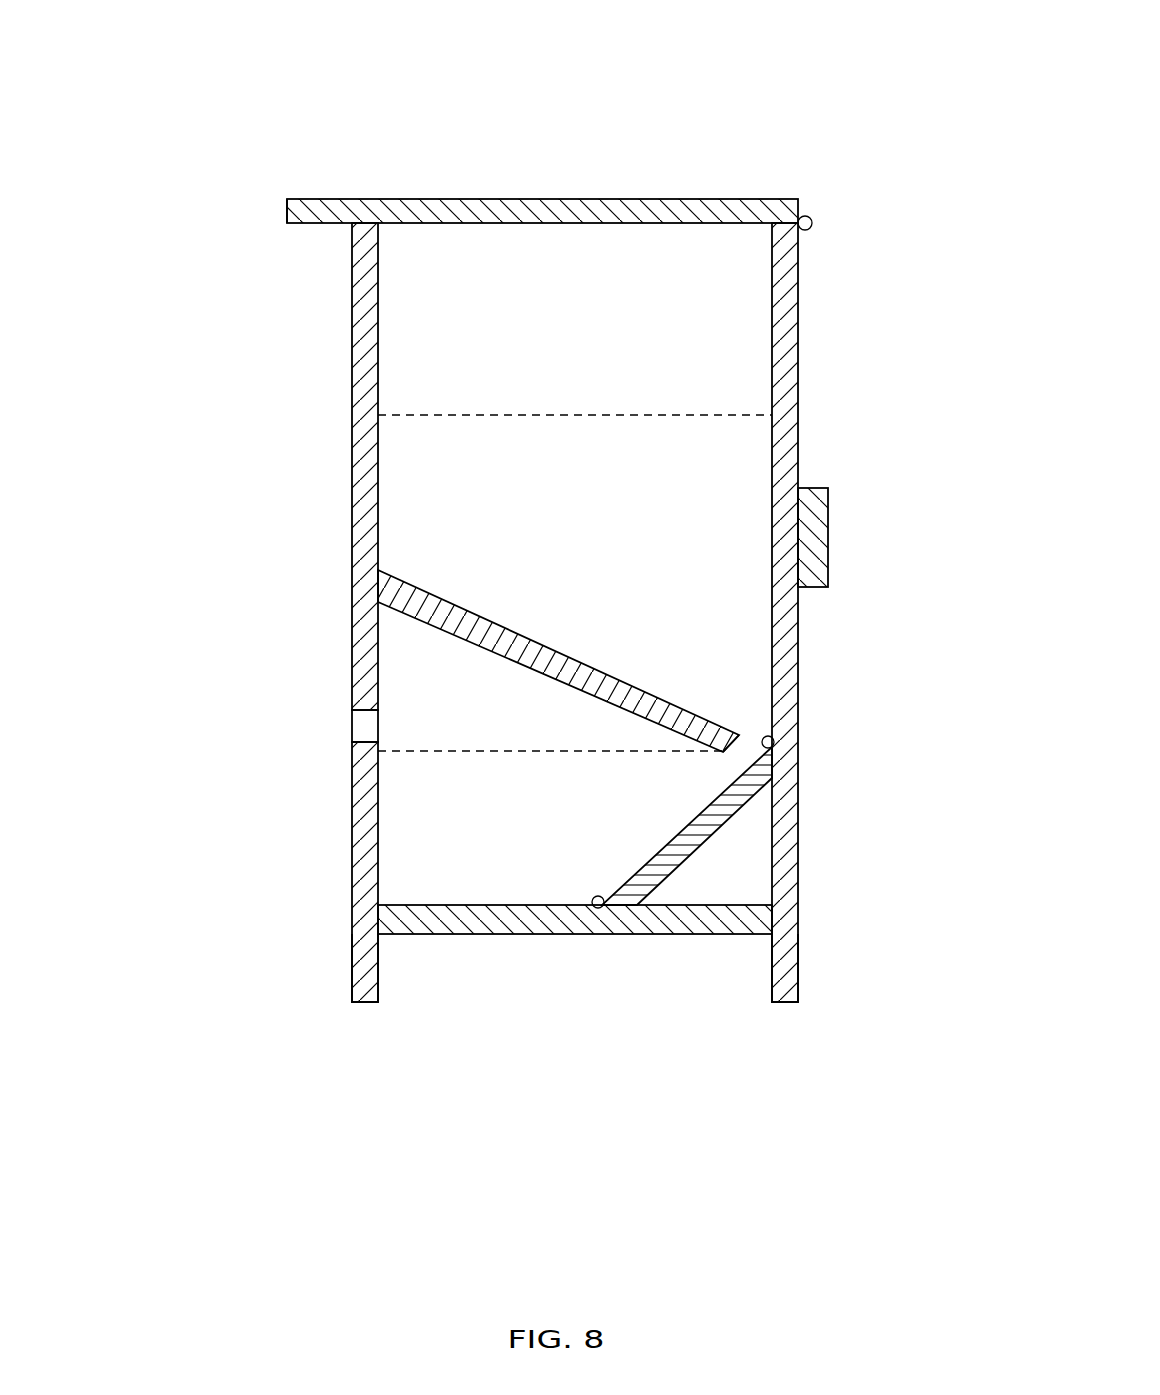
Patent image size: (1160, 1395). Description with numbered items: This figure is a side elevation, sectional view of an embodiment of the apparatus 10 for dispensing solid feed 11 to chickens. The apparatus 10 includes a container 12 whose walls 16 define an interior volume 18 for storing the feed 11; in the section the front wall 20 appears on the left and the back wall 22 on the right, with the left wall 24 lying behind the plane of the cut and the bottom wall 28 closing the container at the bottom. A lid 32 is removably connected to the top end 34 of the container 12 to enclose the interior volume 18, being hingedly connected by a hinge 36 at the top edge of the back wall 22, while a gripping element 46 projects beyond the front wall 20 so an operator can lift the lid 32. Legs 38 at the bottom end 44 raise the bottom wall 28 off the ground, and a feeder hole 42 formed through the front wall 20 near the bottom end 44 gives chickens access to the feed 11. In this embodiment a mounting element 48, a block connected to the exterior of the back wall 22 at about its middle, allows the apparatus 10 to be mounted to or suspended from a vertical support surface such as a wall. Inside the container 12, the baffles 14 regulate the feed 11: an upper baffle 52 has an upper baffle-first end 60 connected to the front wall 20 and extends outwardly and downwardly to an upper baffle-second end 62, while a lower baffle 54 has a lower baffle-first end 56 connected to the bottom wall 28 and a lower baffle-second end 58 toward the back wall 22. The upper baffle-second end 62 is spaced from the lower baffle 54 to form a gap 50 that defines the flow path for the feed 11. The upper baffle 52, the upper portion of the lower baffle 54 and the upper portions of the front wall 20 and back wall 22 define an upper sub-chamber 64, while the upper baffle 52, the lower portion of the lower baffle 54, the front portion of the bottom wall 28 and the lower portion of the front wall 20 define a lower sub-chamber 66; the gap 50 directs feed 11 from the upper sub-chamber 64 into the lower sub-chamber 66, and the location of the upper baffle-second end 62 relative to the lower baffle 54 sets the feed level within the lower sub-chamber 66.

The apparatus 10 is at (847, 125).
The feed 11 is at (698, 413).
The container 12 is at (855, 283).
The baffles 14 is at (623, 612).
The walls 16 is at (322, 406).
The interior volume 18 is at (661, 262).
The front wall 20 is at (347, 279).
The back wall 22 is at (800, 327).
The left wall 24 is at (575, 268).
The bottom wall 28 is at (622, 921).
The lid 32 is at (494, 198).
The top end 34 is at (222, 193).
The hinge 36 is at (811, 217).
The legs 38 is at (351, 948).
The feeder holes 42 is at (352, 722).
The bottom end 44 is at (315, 1020).
The gripping element 46 is at (300, 198).
The mounting element 48 is at (812, 488).
The gap 50 is at (757, 740).
The upper baffle 52 is at (510, 626).
The lower baffle 54 is at (637, 869).
The lower baffle-first end 56 is at (598, 908).
The lower baffle-second end 58 is at (787, 721).
The upper baffle-first end 60 is at (379, 571).
The upper baffle-second end 62 is at (735, 731).
The upper sub-chamber 64 is at (468, 458).
The lower sub-chamber 66 is at (440, 693).